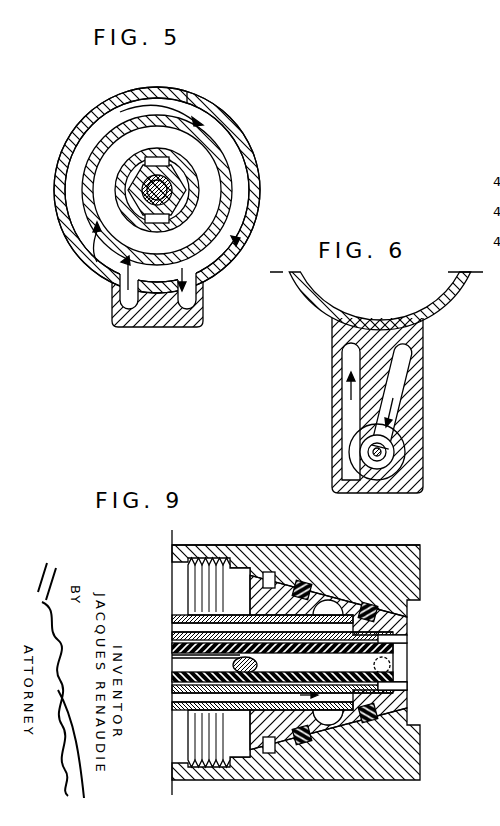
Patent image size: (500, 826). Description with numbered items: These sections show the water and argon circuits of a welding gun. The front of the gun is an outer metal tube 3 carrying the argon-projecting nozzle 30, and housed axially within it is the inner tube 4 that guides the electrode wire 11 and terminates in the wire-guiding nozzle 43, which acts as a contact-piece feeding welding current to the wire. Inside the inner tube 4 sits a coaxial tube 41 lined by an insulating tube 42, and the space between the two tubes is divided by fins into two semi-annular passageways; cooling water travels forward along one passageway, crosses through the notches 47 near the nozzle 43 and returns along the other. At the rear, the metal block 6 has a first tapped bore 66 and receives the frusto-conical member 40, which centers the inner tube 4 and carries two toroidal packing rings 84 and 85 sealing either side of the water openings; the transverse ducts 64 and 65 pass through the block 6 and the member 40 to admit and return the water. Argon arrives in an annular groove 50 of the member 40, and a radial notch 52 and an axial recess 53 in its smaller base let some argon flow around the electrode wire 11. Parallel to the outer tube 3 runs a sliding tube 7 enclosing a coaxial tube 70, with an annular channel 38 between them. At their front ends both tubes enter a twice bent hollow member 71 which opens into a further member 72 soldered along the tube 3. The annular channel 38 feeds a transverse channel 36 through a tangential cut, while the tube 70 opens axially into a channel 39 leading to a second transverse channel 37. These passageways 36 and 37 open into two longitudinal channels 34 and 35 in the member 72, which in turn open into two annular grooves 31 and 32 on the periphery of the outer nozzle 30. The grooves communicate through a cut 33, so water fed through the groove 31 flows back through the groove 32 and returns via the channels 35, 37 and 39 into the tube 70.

In FIG. 5, the metal tube 3 is at (253, 178).
In FIG. 6, the metal tube 3 is at (466, 292).
In FIG. 5, the electrode wire 11 is at (170, 196).
In FIG. 5, the argon-projecting nozzle 30 is at (222, 157).
In FIG. 5, the annular groove 31 is at (82, 223).
In FIG. 5, the annular groove 32 is at (224, 240).
In FIG. 5, the cut 33 is at (187, 105).
In FIG. 5, the longitudinal channel 34 is at (121, 300).
In FIG. 5, the longitudinal channel 35 is at (197, 301).
In FIG. 5, the wire-guiding nozzle 43 is at (165, 188).
In FIG. 5, the notches 47 is at (152, 157).
In FIG. 5, the member 72 is at (163, 321).
In FIG. 6, the transverse channel 36 is at (350, 372).
In FIG. 6, the transverse channel 37 is at (403, 368).
In FIG. 6, the annular channel 38 is at (392, 465).
In FIG. 6, the channel 39 is at (383, 452).
In FIG. 6, the tube 70 is at (376, 432).
In FIG. 6, the twice bent hollow member 71 is at (420, 395).
In FIG. 6, the tube 7 is at (398, 475).
In FIG. 9, the inner tube 4 is at (183, 618).
In FIG. 9, the rear metal block 6 is at (241, 546).
In FIG. 9, the frusto-conical member 40 is at (384, 600).
In FIG. 9, the coaxial tube 41 is at (183, 628).
In FIG. 9, the insulating tube 42 is at (172, 650).
In FIG. 9, the annular groove 50 is at (268, 574).
In FIG. 9, the radial notch 52 is at (400, 662).
In FIG. 9, the axial recess 53 is at (405, 692).
In FIG. 9, the transverse duct 64 is at (336, 718).
In FIG. 9, the transverse duct 65 is at (333, 605).
In FIG. 9, the first tapped bore 66 is at (210, 556).
In FIG. 9, the toroidal packing ring 84 is at (303, 583).
In FIG. 9, the toroidal packing ring 85 is at (369, 604).